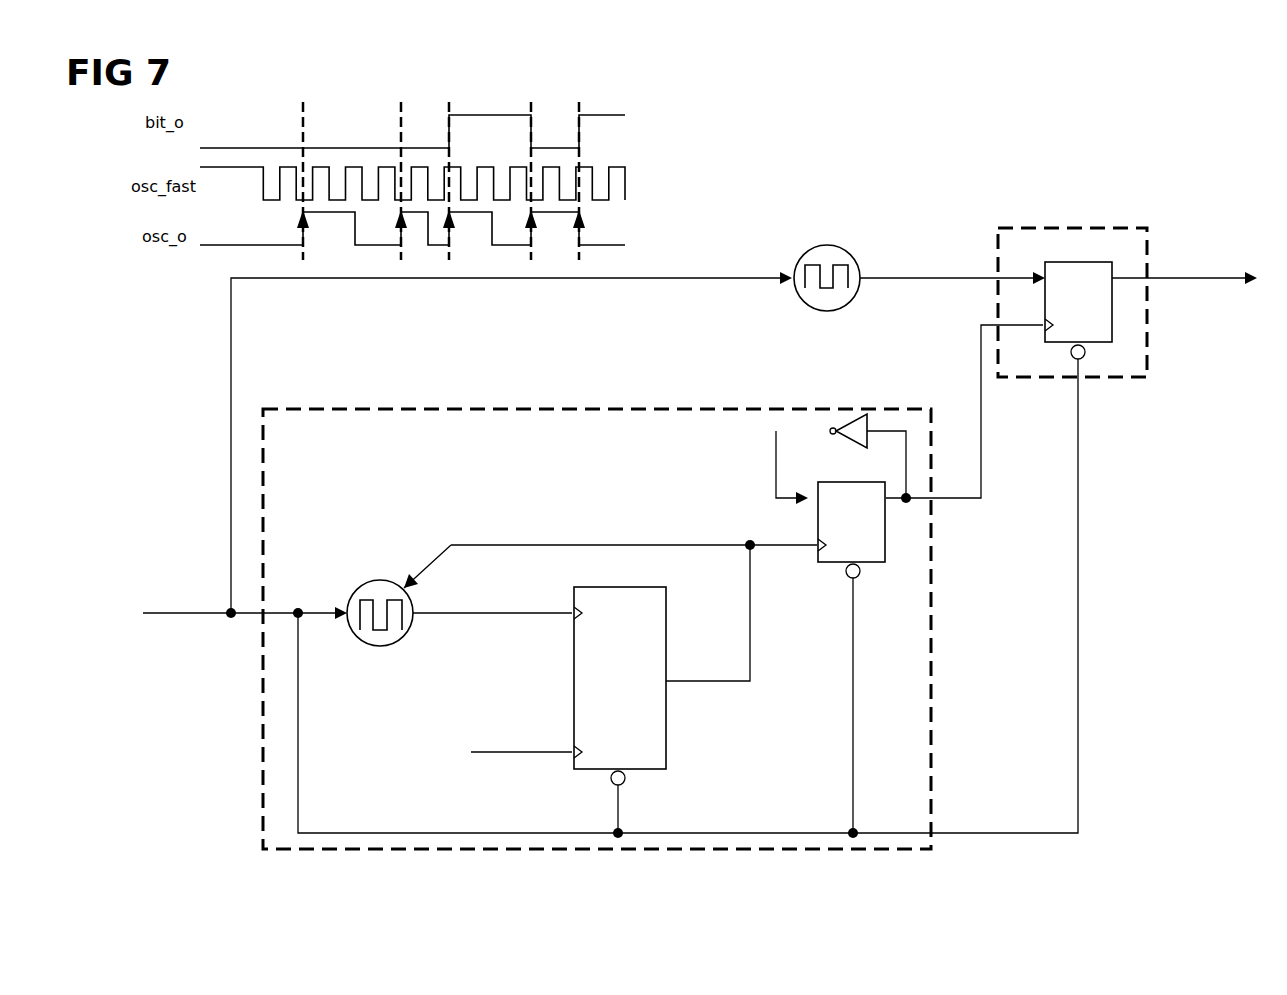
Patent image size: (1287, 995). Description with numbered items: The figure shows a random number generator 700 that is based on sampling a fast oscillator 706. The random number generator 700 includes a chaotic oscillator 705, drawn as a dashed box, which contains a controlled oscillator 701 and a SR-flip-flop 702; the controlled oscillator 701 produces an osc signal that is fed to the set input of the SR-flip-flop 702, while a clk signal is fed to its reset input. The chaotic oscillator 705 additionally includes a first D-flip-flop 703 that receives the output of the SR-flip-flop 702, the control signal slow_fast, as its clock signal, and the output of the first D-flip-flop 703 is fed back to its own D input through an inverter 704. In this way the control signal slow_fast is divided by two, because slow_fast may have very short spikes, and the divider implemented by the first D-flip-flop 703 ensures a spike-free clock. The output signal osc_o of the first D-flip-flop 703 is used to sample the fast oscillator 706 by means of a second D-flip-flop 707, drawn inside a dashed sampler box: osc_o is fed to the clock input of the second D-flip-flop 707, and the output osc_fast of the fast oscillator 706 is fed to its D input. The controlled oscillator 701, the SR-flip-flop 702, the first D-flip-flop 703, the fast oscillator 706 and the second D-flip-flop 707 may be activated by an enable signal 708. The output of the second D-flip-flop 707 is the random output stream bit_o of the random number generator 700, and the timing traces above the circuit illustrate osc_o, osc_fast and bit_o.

The random number generator 700 is at (1116, 122).
The controlled oscillator 701 is at (380, 581).
The SR-flip-flop 702 is at (602, 587).
The first D-flip-flop 703 is at (885, 556).
The inverter 704 is at (855, 412).
The chaotic oscillator 705 is at (503, 408).
The fast oscillator 706 is at (836, 245).
The second D-flip-flop 707 is at (1075, 262).
The enable signal 708 is at (178, 590).